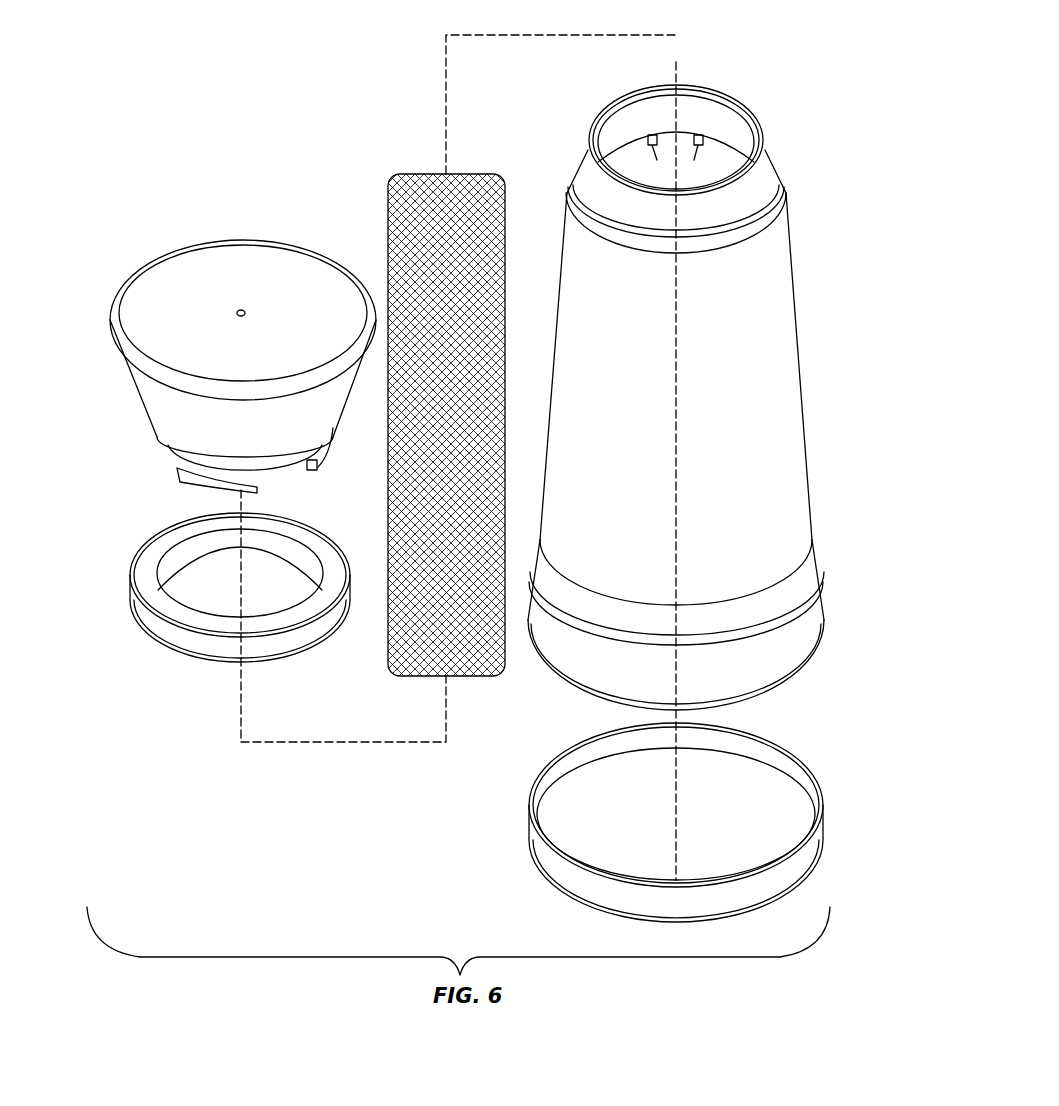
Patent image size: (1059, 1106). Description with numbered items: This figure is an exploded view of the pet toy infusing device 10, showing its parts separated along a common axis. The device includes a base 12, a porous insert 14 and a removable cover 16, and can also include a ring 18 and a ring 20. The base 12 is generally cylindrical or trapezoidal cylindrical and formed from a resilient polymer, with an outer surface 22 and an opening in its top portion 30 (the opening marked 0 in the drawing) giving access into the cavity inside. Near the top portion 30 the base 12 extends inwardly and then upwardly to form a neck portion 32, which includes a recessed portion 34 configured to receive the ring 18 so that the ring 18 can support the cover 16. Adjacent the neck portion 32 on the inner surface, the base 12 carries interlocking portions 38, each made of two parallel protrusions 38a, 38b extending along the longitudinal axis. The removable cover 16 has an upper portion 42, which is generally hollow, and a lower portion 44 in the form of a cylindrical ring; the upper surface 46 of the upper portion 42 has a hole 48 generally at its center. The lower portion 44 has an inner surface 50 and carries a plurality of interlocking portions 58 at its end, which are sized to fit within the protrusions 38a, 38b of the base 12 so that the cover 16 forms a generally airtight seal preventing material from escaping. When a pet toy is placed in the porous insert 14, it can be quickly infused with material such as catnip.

The pet toy infusing device 10 is at (695, 388).
The base 12 is at (692, 451).
The porous insert 14 is at (506, 301).
The removable cover 16 is at (234, 369).
The ring 18 is at (178, 653).
The ring 20 is at (782, 753).
The outer surface 22 is at (787, 381).
The top portion 30 is at (710, 92).
The inner lip of rim 0 is at (737, 114).
The neck portion 32 is at (763, 156).
The recessed portion 34 is at (763, 181).
The interlocking portions 38 is at (678, 184).
The protrusion 38a is at (658, 161).
The protrusion 38b is at (698, 161).
The upper portion 42 is at (137, 275).
The lower portion 44 is at (163, 450).
The upper surface 46 is at (303, 268).
The hole 48 is at (240, 309).
The inner surface 50 is at (290, 460).
The interlocking portions 58 is at (184, 480).